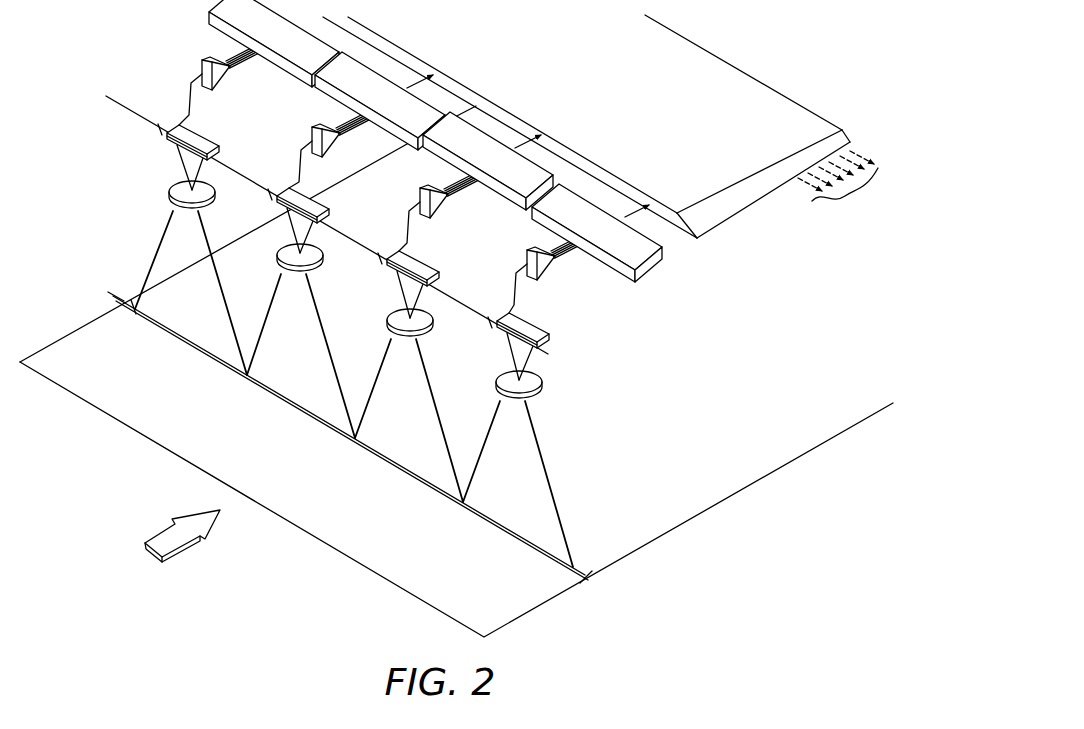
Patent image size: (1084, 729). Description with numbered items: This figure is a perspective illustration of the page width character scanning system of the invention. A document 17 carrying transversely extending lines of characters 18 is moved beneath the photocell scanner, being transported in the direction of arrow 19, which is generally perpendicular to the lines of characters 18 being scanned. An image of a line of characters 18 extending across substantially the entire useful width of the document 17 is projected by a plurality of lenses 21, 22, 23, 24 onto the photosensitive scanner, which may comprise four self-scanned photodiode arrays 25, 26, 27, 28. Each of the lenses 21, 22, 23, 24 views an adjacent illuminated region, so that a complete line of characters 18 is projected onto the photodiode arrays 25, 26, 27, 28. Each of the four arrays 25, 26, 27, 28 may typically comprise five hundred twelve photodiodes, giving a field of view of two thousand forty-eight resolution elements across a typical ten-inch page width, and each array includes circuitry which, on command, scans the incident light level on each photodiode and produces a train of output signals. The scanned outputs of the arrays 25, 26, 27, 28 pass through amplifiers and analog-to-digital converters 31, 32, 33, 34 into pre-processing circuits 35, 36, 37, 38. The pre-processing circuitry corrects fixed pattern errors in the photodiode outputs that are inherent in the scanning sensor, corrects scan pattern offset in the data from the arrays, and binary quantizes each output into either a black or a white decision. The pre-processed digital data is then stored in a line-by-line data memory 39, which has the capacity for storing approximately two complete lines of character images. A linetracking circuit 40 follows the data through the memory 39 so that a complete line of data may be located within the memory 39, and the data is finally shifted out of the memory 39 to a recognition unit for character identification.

The document 17 is at (166, 452).
The lines of characters 18 is at (335, 429).
The arrow 19 is at (190, 547).
The lens 21 is at (498, 401).
The lens 22 is at (393, 340).
The lens 23 is at (287, 270).
The lens 24 is at (177, 212).
The self-scanned photodiode array 25 is at (545, 343).
The self-scanned photodiode array 26 is at (433, 277).
The self-scanned photodiode array 27 is at (320, 213).
The self-scanned photodiode array 28 is at (208, 138).
The amplifier and analog-to-digital converter 31 is at (526, 259).
The amplifier and analog-to-digital converter 32 is at (420, 197).
The amplifier and analog-to-digital converter 33 is at (311, 133).
The amplifier and analog-to-digital converter 34 is at (201, 73).
The pre-processing circuit 35 is at (540, 219).
The pre-processing circuit 36 is at (438, 162).
The pre-processing circuit 37 is at (333, 97).
The pre-processing circuit 38 is at (223, 33).
The line-by-line data memory 39 is at (762, 84).
The linetracking circuit 40 is at (841, 129).